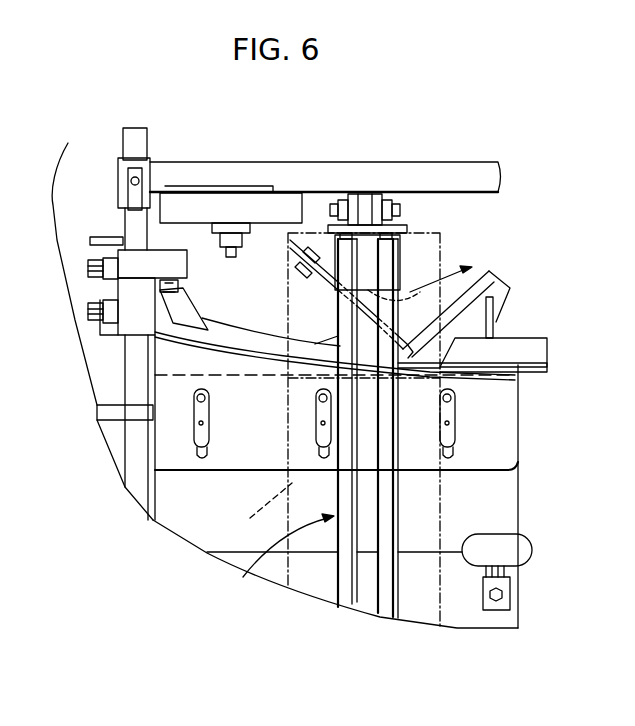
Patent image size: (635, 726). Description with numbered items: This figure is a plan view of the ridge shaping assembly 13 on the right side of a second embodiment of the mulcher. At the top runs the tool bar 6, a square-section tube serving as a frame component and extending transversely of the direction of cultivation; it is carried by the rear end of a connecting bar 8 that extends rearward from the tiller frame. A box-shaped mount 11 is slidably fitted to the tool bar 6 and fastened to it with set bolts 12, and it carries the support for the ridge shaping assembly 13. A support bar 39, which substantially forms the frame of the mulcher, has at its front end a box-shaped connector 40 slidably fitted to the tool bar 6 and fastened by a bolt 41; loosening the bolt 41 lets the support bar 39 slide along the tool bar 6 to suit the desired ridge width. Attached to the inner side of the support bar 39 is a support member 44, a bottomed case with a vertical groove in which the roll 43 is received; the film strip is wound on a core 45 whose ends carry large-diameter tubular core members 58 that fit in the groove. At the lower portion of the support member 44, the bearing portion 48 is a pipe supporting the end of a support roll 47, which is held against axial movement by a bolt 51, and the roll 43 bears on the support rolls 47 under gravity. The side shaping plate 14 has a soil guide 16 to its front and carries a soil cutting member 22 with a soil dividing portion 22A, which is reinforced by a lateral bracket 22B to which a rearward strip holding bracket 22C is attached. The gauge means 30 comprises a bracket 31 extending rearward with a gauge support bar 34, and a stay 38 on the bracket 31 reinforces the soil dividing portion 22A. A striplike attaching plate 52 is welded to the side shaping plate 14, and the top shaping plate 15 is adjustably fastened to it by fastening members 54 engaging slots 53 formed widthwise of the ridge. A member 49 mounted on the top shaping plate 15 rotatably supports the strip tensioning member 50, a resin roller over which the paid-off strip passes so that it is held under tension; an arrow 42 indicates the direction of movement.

The tool bar 6 is at (133, 142).
The connecting bar 8 is at (112, 412).
The box-shaped mount 11 is at (140, 325).
The set bolt 12 is at (88, 313).
The ridge shaping assembly 13 is at (457, 629).
The side shaping plate 14 is at (237, 338).
The top shaping plate 15 is at (503, 517).
The soil guide 16 is at (112, 237).
The soil cutting member 22 is at (499, 284).
The soil dividing portion 22A is at (504, 284).
The lateral bracket 22B is at (494, 320).
The strip holding bracket 22C is at (517, 343).
The gauge means 30 is at (240, 190).
The bracket 31 is at (270, 216).
The gauge support bar 34 is at (230, 258).
The stay 38 is at (330, 281).
The support bar 39 is at (318, 170).
The box-shaped connector 40 is at (149, 163).
The bolt 41 is at (141, 181).
The movement direction arrow 42 is at (263, 597).
The roll 43 is at (255, 510).
The support member 44 is at (372, 194).
The core 45 is at (400, 310).
The support roll 47 is at (390, 498).
The bearing portion 48 is at (392, 212).
The member 49 is at (503, 595).
The strip tensioning member 50 is at (530, 548).
The bolt 51 is at (336, 210).
The attaching plate 52 is at (505, 433).
The slot 53 is at (205, 452).
The fastening member 54 is at (205, 399).
The tubular core member 58 is at (458, 242).